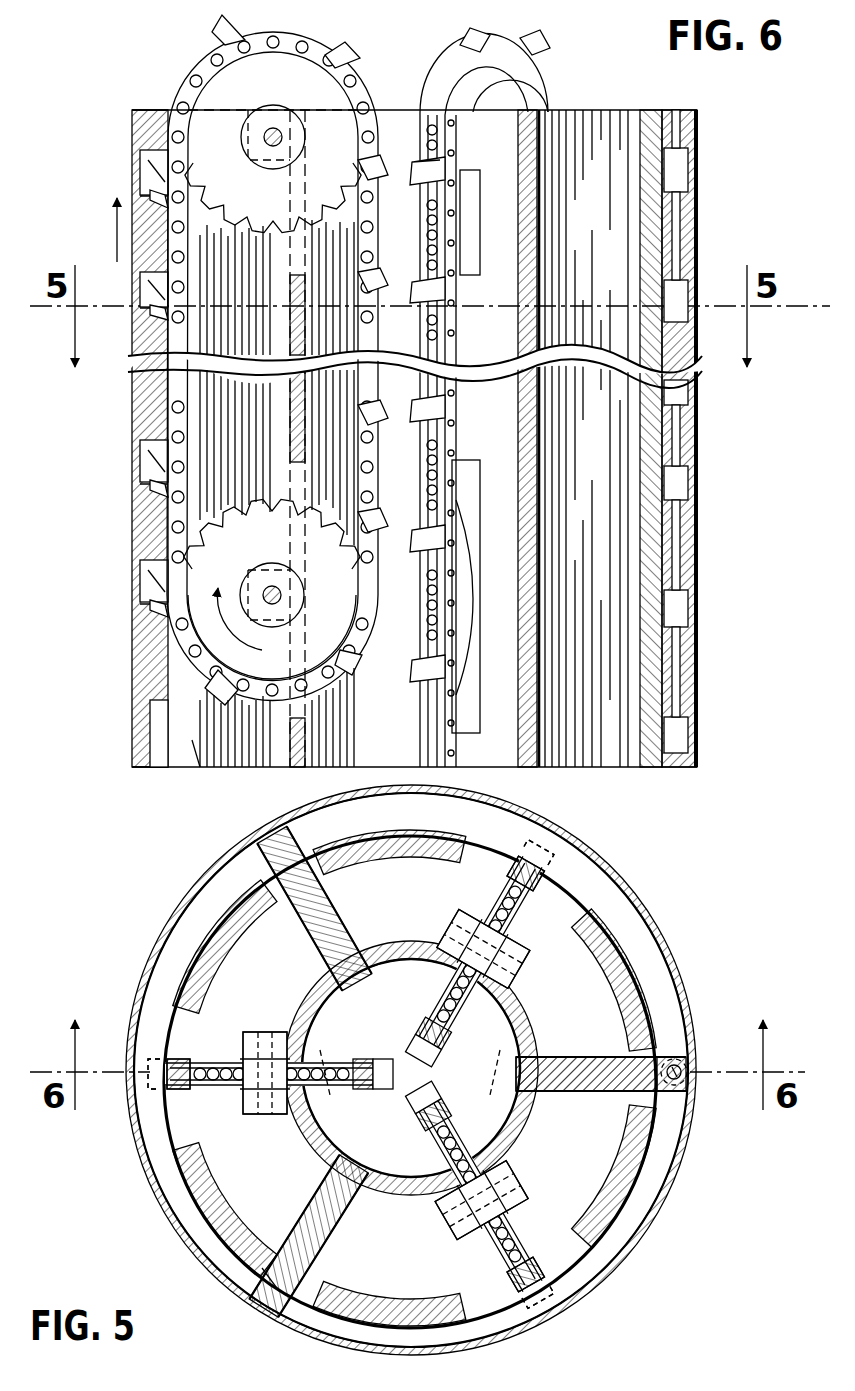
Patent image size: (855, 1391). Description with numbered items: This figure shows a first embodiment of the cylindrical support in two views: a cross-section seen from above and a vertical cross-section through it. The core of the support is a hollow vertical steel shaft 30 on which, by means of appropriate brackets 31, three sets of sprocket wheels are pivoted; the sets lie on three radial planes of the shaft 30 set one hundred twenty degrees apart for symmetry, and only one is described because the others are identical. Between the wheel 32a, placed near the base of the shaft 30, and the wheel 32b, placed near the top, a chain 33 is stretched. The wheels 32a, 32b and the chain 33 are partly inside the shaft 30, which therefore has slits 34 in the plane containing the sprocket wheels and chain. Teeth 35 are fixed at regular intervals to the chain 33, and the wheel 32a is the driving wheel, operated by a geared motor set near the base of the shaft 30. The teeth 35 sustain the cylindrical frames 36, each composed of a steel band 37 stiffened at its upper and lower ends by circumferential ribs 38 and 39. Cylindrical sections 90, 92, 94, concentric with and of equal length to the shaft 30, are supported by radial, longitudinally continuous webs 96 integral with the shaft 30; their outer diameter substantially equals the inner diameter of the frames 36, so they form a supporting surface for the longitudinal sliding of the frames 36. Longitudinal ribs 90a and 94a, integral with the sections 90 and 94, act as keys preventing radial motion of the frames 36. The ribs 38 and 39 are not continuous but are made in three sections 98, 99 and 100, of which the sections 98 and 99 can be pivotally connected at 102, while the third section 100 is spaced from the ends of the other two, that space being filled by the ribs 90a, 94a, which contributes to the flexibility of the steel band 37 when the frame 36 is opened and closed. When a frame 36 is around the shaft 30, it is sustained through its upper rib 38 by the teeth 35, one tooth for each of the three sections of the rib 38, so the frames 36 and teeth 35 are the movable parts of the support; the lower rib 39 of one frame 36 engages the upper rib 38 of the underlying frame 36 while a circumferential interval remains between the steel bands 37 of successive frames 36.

In FIG. 6, the hollow vertical steel shaft 30 is at (540, 736).
In FIG. 5, the hollow vertical steel shaft 30 is at (328, 983).
In FIG. 6, the brackets 31 is at (273, 110).
In FIG. 5, the brackets 31 is at (254, 1030).
In FIG. 6, the driving sprocket wheel 32a is at (258, 500).
In FIG. 5, the driving sprocket wheel 32a is at (218, 1087).
In FIG. 6, the upper sprocket wheel 32b is at (310, 95).
In FIG. 6, the chain 33 is at (545, 110).
In FIG. 5, the chain 33 is at (183, 1059).
In FIG. 6, the slits 34 is at (300, 260).
In FIG. 5, the slits 34 is at (312, 1040).
In FIG. 6, the teeth 35 is at (224, 36).
In FIG. 5, the teeth 35 is at (150, 1062).
In FIG. 6, the cylindrical frames 36 is at (130, 110).
In FIG. 6, the steel band 37 is at (697, 170).
In FIG. 6, the upper circumferential rib 38 is at (158, 110).
In FIG. 6, the lower circumferential rib 39 is at (142, 176).
In FIG. 5, the lower circumferential rib 39 is at (150, 944).
In FIG. 6, the cylindrical section 90 is at (203, 768).
In FIG. 5, the cylindrical section 90 is at (206, 782).
In FIG. 5, the longitudinal rib 90a is at (262, 832).
In FIG. 6, the cylindrical section 92 is at (650, 626).
In FIG. 5, the cylindrical section 92 is at (633, 1178).
In FIG. 5, the cylindrical section 94 is at (230, 1203).
In FIG. 5, the longitudinal rib 94a is at (266, 1302).
In FIG. 6, the radial webs 96 is at (603, 128).
In FIG. 5, the radial webs 96 is at (333, 908).
In FIG. 5, the rib section 98 is at (586, 874).
In FIG. 5, the rib section 99 is at (606, 1257).
In FIG. 5, the rib section 100 is at (162, 1165).
In FIG. 6, the pivotal connection 102 is at (680, 226).
In FIG. 5, the pivotal connection 102 is at (680, 1062).